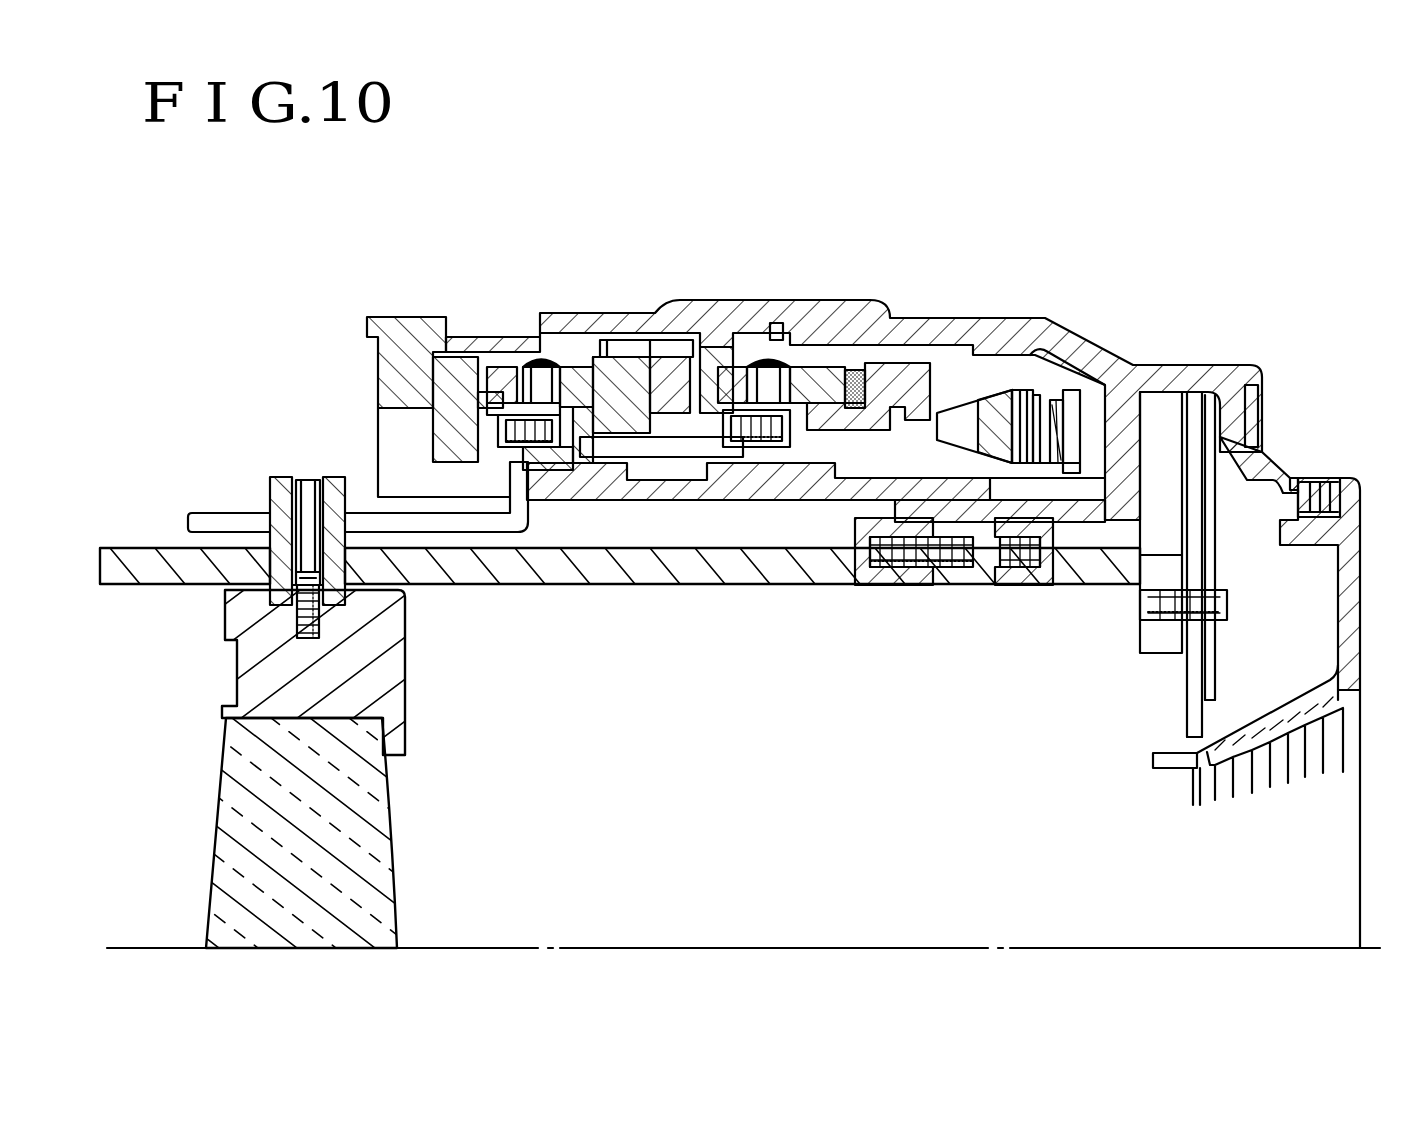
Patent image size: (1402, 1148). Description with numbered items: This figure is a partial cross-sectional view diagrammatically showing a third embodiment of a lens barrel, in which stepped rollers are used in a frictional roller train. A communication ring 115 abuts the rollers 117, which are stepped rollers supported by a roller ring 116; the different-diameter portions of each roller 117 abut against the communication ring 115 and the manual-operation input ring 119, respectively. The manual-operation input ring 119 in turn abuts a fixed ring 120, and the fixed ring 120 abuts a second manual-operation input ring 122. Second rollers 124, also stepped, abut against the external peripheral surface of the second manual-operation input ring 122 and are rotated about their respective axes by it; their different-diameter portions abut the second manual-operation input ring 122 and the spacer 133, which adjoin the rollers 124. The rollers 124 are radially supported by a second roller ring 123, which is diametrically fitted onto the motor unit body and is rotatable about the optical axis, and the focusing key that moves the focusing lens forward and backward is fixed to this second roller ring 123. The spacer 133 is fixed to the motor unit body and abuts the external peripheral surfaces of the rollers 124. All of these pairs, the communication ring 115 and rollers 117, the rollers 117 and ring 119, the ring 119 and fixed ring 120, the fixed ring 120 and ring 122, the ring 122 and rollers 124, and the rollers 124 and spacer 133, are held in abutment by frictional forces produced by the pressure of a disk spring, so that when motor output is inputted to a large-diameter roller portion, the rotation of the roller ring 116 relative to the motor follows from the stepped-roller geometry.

The communication ring 115 is at (880, 296).
The roller ring 116 is at (767, 358).
The rollers 117 is at (830, 365).
The manual-operation input ring 119 is at (702, 372).
The fixed ring 120 is at (670, 365).
The second manual-operation input ring 122 is at (622, 375).
The second roller ring 123 is at (535, 378).
The rollers 124 is at (567, 377).
The spacer 133 is at (457, 380).